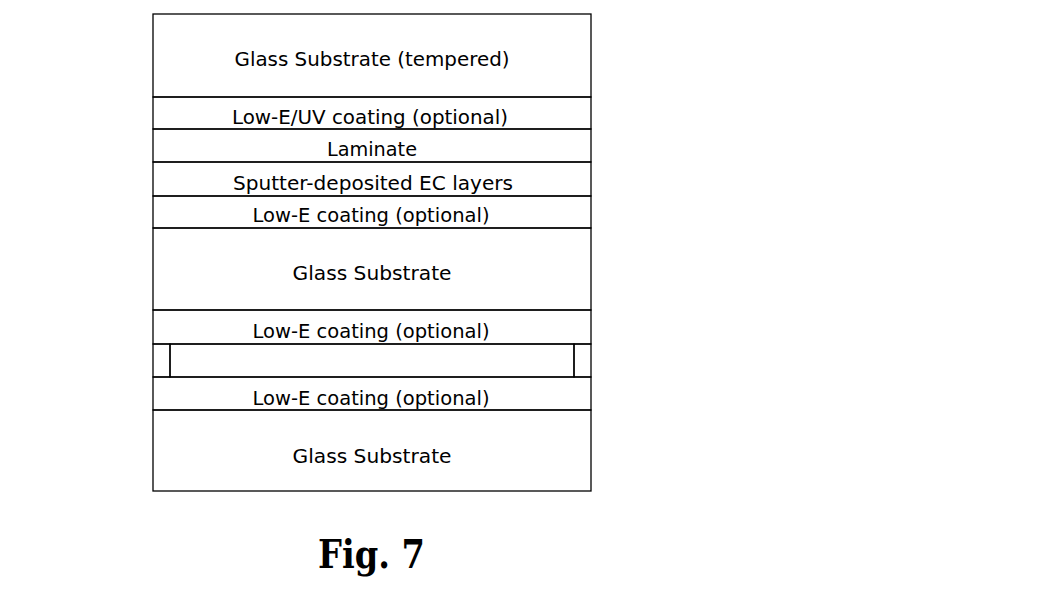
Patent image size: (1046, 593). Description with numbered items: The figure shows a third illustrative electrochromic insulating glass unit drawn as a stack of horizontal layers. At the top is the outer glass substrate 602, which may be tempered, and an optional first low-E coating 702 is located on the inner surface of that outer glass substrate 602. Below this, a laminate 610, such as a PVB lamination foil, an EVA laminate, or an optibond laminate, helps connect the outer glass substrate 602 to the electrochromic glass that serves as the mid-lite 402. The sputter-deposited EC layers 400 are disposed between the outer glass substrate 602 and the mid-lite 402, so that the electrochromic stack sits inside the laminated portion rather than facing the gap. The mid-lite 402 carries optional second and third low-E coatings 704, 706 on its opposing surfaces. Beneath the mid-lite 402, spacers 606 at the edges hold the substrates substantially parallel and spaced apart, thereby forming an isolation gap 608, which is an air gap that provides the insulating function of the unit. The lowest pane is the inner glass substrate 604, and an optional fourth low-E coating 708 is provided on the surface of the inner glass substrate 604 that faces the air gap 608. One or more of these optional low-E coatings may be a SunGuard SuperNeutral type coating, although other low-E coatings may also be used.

The outer glass substrate 602 is at (591, 53).
The first low-E coating 702 is at (591, 110).
The laminate 610 is at (591, 142).
The sputter-deposited EC layers 400 is at (591, 175).
The second low-E coating 704 is at (591, 208).
The mid-lite 402 is at (591, 267).
The third low-E coating 706 is at (591, 328).
The spacers 606 is at (591, 359).
The isolation gap 608 is at (227, 365).
The fourth low-E coating 708 is at (591, 390).
The inner glass substrate 604 is at (591, 450).